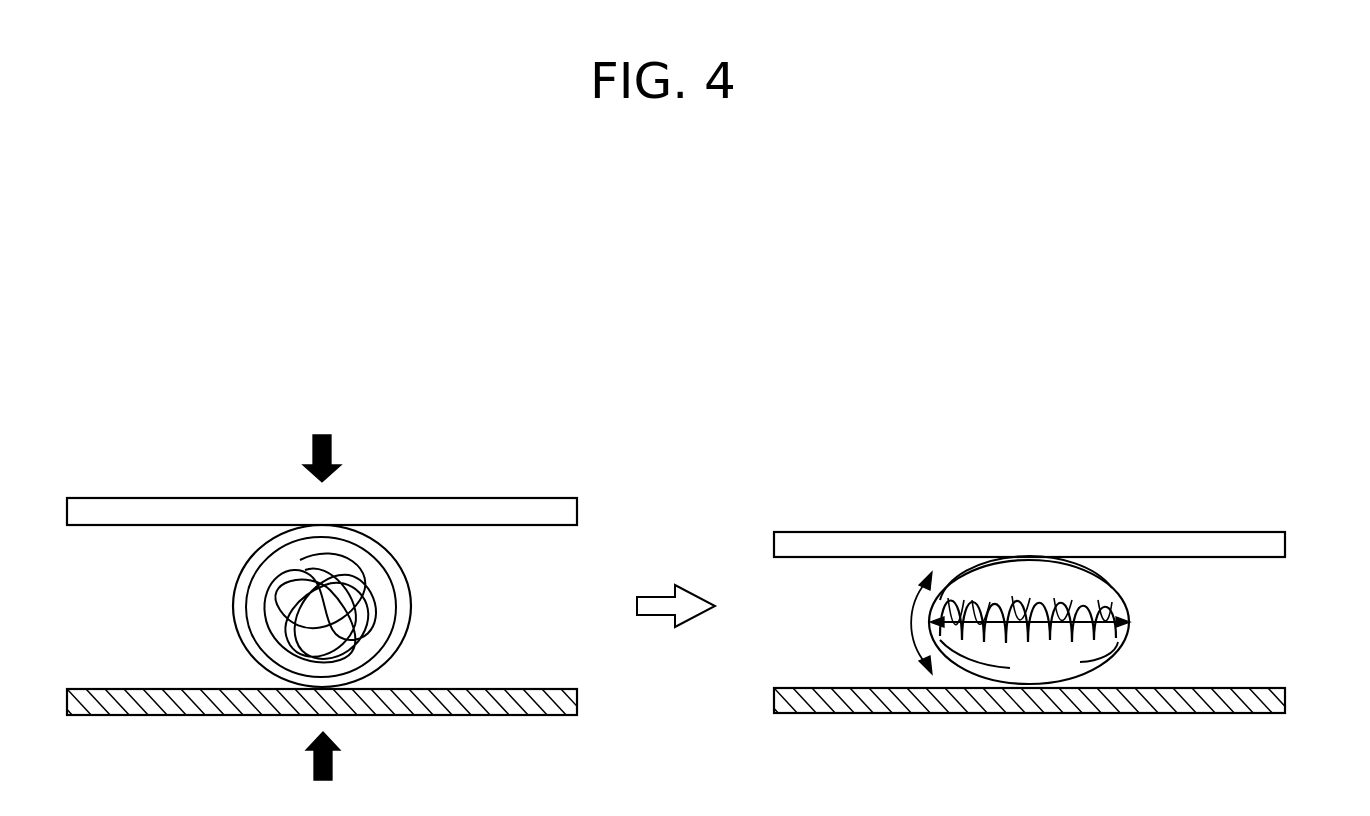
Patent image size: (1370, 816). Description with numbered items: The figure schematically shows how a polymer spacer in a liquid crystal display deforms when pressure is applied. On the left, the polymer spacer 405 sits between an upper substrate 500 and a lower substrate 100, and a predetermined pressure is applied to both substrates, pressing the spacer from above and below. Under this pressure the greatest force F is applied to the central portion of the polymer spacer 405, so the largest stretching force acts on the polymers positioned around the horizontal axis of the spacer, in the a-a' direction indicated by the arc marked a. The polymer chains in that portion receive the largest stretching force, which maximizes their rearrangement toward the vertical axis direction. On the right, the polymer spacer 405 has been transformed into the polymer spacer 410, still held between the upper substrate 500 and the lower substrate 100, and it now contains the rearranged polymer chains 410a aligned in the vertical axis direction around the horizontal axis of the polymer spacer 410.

The upper substrate 500 is at (570, 511).
The lower substrate 100 is at (570, 702).
The polymer spacer 405 is at (412, 581).
The polymer spacer 410 is at (1120, 585).
The rearranged polymer chains 410a is at (1100, 648).
The force F is at (1130, 622).
The a-a' direction a is at (912, 625).